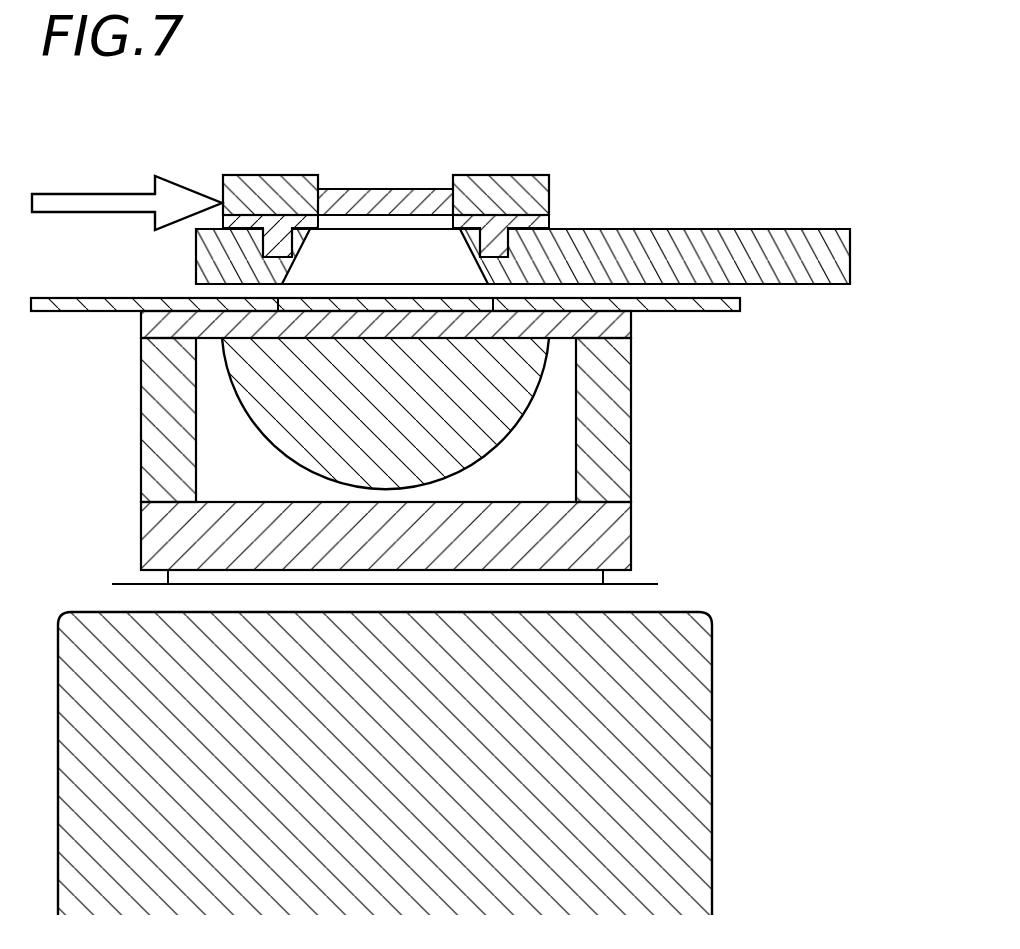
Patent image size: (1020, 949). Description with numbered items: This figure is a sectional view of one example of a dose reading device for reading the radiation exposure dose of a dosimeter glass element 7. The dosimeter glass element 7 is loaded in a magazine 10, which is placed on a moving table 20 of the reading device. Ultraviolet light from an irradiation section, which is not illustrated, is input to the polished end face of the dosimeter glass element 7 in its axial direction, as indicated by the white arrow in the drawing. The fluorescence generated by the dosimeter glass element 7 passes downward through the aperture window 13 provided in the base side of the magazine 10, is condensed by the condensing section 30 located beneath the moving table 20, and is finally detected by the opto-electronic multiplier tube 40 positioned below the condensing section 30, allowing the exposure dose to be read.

The dosimeter glass element 7 is at (397, 205).
The magazine 10 is at (520, 188).
The aperture window 13 is at (340, 205).
The moving table 20 is at (738, 245).
The condensing section 30 is at (508, 415).
The opto-electronic multiplier tube 40 is at (675, 775).